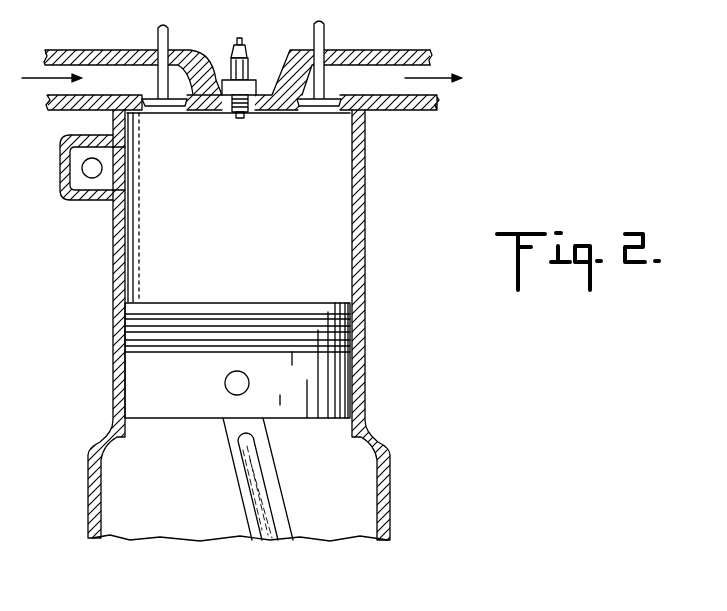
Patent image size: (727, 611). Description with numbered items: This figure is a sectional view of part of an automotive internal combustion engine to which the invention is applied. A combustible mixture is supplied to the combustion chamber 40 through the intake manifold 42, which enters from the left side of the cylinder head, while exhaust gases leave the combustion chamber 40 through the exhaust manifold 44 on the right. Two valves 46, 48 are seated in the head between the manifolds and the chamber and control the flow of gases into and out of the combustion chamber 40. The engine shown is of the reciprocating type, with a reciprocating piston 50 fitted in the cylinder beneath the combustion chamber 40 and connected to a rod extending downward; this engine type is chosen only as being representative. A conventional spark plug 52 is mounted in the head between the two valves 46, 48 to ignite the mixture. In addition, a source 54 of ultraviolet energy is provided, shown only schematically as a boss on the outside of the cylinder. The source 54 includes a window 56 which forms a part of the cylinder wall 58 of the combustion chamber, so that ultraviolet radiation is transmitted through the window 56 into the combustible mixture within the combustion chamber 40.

The combustion chamber 40 is at (338, 218).
The intake manifold 42 is at (104, 75).
The exhaust manifold 44 is at (378, 77).
The valve 46 is at (170, 32).
The valve 48 is at (326, 30).
The reciprocating piston 50 is at (335, 382).
The spark plug 52 is at (247, 62).
The source of ultraviolet energy 54 is at (60, 161).
The window 56 is at (126, 168).
The cylinder wall 58 is at (127, 256).